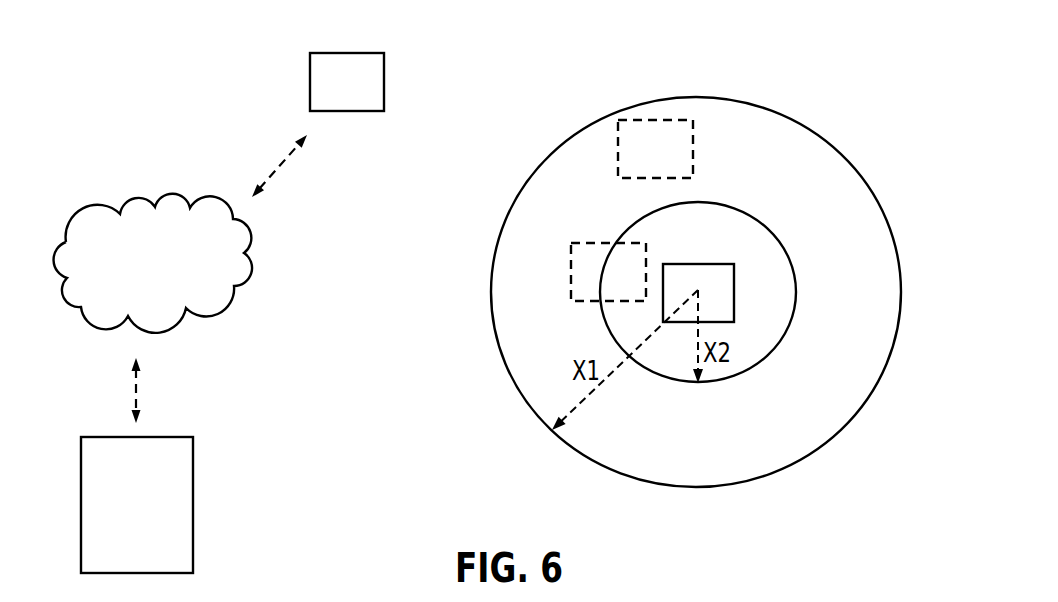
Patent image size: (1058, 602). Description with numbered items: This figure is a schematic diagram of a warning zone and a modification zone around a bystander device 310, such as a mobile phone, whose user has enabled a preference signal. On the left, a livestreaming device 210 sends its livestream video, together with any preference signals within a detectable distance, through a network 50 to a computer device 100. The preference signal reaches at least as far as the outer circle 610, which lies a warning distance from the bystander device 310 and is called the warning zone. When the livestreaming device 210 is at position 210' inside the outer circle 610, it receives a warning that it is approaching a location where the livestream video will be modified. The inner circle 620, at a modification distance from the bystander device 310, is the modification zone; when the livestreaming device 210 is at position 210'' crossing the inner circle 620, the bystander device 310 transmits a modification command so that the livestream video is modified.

The network (cloud) 50 is at (137, 202).
The livestreaming device 210 is at (284, 60).
The computer device 100 is at (193, 485).
The bystander device 310 is at (698, 264).
The outer circle 610 is at (845, 150).
The inner circle 620 is at (770, 358).
The position of livestreaming device inside warning zone 210' is at (624, 110).
The position of livestreaming device crossing modification zone 210'' is at (530, 245).